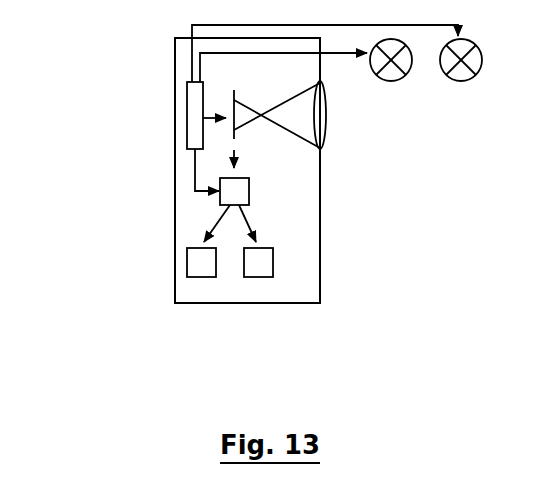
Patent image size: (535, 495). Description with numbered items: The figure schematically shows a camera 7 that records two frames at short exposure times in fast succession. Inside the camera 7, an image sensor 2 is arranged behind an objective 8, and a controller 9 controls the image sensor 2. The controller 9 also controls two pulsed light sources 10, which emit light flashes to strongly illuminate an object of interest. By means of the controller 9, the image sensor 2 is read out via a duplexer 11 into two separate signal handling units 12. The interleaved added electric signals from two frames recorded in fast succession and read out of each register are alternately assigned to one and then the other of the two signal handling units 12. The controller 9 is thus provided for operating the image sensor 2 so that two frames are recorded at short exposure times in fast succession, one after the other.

The camera 7 is at (145, 93).
The controller 9 is at (187, 138).
The image sensor 2 is at (231, 134).
The objective 8 is at (327, 123).
The pulsed light sources 10 is at (429, 103).
The duplexer 11 is at (249, 189).
The signal handling units 12 is at (187, 262).